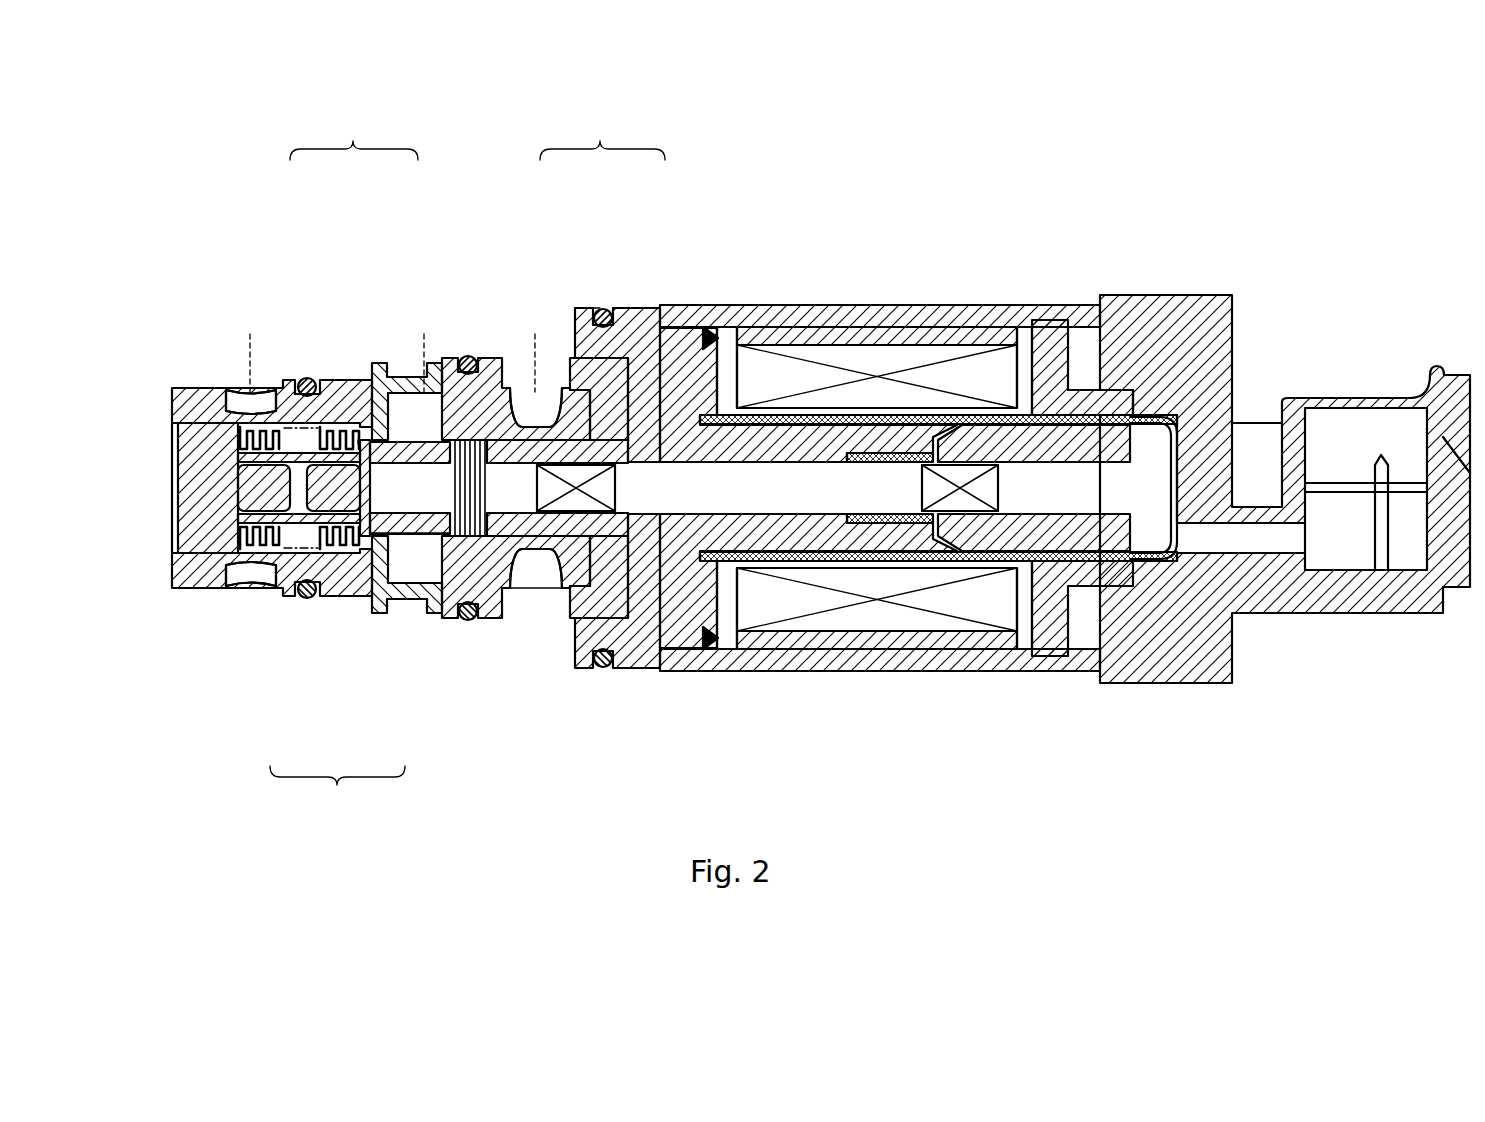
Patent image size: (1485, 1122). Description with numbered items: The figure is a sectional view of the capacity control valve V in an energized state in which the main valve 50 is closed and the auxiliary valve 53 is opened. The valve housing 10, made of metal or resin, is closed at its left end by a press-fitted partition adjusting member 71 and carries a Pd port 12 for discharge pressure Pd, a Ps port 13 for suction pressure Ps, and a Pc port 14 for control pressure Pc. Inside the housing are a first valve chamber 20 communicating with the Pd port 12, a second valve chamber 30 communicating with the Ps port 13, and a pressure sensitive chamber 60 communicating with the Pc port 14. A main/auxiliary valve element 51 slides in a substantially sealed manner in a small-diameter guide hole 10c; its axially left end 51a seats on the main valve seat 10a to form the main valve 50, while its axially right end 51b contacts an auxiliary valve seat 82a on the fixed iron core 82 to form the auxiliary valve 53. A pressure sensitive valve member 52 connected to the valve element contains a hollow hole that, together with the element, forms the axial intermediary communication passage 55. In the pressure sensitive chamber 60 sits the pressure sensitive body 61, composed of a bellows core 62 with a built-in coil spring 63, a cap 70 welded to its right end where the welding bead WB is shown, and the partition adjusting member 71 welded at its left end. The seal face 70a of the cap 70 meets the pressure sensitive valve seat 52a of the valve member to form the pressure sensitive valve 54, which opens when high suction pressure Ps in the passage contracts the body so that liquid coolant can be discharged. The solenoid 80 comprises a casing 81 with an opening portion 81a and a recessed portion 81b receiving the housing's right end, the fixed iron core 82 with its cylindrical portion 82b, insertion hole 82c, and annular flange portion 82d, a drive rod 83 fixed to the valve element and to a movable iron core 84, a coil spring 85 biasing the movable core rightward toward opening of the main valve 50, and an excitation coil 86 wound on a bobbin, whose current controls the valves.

The valve housing 10 is at (198, 362).
The main valve seat 10a is at (386, 362).
The small-diameter guide hole 10c is at (538, 565).
The Pd port 12 is at (462, 356).
The Ps port 13 is at (492, 384).
The Pc port 14 is at (212, 386).
The first valve chamber 20 is at (393, 364).
The second valve chamber 30 is at (573, 357).
The main valve 50 is at (354, 134).
The main/auxiliary valve element 51 is at (583, 687).
The axially left end 51a is at (364, 484).
The axially right end 51b is at (620, 300).
The pressure sensitive valve member 52 is at (438, 600).
The pressure sensitive valve seat 52a is at (372, 545).
The auxiliary valve 53 is at (602, 134).
The pressure sensitive valve 54 is at (337, 789).
The intermediary communication passage 55 is at (464, 620).
The pressure sensitive chamber 60 is at (303, 377).
The pressure sensitive body 61 is at (235, 575).
The bellows core 62 is at (268, 592).
The coil spring 63 is at (330, 592).
The cap 70 is at (372, 600).
The seal face 70a is at (380, 597).
The partition adjusting member 71 is at (190, 490).
The solenoid 80 is at (1169, 276).
The casing 81 is at (633, 683).
The opening portion 81a is at (690, 650).
The recessed portion 81b is at (670, 655).
The fixed iron core 82 is at (932, 304).
The auxiliary valve seat 82a is at (592, 300).
The cylindrical portion 82b is at (871, 304).
The insertion hole 82c is at (797, 304).
The annular flange portion 82d is at (672, 304).
The drive rod 83 is at (880, 590).
The movable iron core 84 is at (1060, 522).
The coil spring 85 is at (985, 627).
The excitation coil 86 is at (903, 612).
The capacity control valve V is at (1308, 128).
The welding bead WB is at (358, 440).
The control pressure Pc is at (253, 351).
The discharge pressure Pd is at (426, 349).
The suction pressure Ps is at (533, 349).